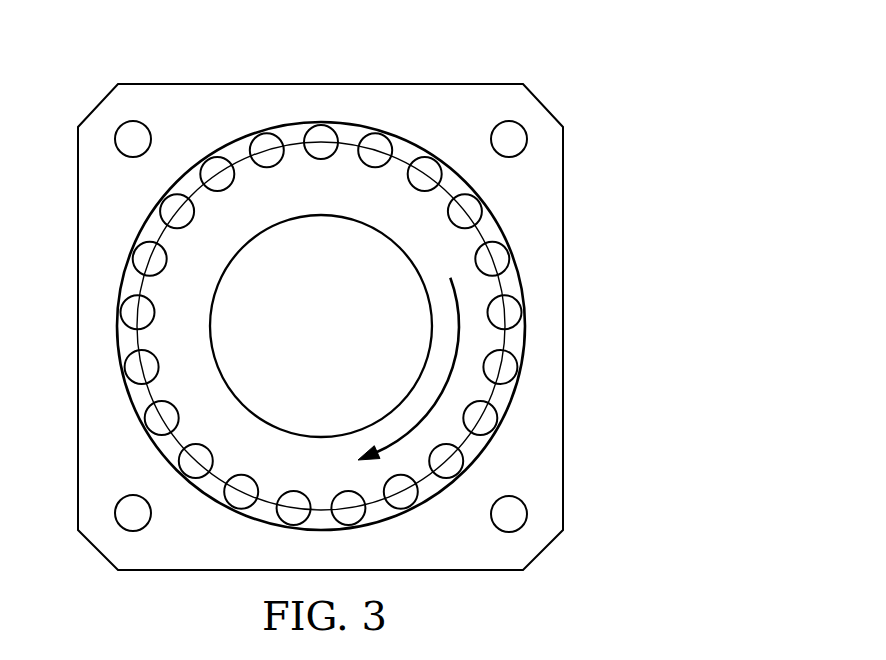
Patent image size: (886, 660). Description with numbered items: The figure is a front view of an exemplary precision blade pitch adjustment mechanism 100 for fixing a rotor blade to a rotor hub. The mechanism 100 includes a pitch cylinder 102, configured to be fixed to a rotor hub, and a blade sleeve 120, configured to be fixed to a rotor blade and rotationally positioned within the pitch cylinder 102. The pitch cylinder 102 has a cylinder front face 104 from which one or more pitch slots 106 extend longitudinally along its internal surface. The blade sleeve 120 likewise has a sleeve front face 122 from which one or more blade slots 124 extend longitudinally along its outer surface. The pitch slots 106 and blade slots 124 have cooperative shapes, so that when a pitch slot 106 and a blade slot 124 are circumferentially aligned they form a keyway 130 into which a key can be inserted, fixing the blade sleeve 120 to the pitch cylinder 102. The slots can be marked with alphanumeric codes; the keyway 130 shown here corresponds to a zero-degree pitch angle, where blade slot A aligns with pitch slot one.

The precision blade pitch adjustment mechanism 100 is at (285, 285).
The pitch cylinder 102 is at (140, 313).
The cylinder front face 104 is at (222, 163).
The pitch slots 106 is at (296, 125).
The blade sleeve 120 is at (412, 405).
The sleeve front face 122 is at (268, 472).
The blade slots 124 is at (308, 157).
The keyway 130 is at (330, 142).